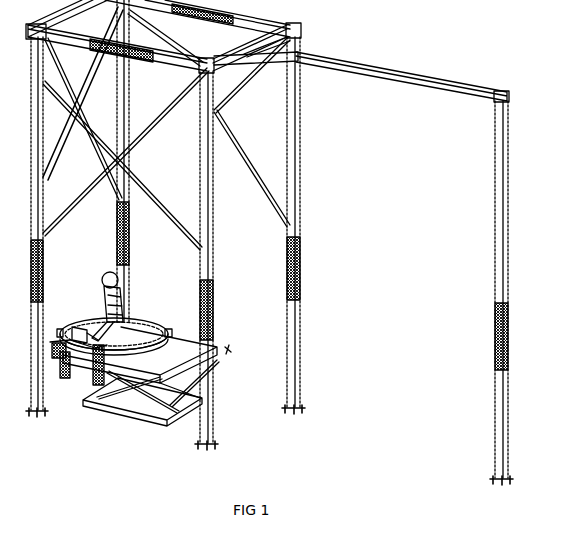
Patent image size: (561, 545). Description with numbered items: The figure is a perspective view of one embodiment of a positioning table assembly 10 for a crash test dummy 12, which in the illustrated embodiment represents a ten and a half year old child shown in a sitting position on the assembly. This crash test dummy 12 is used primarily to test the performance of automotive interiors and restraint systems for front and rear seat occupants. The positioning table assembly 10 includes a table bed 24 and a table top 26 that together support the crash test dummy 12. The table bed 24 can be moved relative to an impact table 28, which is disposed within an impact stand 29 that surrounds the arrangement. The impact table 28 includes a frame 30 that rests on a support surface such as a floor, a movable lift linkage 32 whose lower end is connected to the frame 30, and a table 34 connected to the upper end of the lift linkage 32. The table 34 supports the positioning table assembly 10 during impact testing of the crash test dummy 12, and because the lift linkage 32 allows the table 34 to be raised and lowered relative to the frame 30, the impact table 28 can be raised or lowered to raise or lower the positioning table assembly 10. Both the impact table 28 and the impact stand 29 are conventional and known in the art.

The positioning table assembly 10 is at (159, 349).
The crash test dummy 12 is at (96, 274).
The table bed 24 is at (53, 338).
The table top 26 is at (151, 313).
The impact table 28 is at (229, 349).
The impact stand 29 is at (305, 189).
The frame 30 is at (123, 405).
The lift linkage 32 is at (150, 405).
The table 34 is at (181, 350).